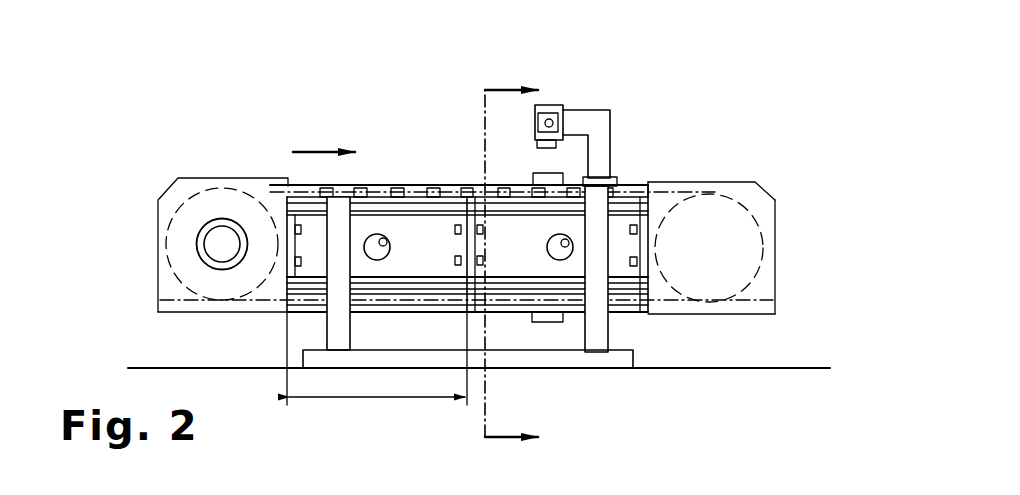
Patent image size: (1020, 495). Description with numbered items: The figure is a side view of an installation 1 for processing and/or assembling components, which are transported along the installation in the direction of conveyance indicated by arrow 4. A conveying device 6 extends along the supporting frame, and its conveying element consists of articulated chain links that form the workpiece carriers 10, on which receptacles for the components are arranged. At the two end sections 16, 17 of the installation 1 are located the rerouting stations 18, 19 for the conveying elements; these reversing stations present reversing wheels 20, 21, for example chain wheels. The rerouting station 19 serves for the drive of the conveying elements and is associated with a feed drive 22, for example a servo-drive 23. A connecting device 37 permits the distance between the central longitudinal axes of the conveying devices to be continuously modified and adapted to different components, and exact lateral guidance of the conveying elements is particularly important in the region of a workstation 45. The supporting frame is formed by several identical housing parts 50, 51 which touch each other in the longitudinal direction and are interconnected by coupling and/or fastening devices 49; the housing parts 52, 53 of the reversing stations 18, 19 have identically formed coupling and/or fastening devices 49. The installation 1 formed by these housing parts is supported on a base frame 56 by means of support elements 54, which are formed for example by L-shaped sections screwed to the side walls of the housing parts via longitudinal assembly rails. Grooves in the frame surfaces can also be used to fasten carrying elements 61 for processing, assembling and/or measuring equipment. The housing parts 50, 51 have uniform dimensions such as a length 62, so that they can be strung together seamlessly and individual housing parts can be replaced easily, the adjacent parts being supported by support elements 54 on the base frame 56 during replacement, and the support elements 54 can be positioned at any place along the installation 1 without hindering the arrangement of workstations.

The installation 1 is at (108, 128).
The direction of conveyance 4 is at (315, 150).
The conveying device 6 is at (641, 170).
The workpiece carrier 10 is at (523, 190).
The end section 16 is at (789, 184).
The end section 17 is at (190, 172).
The rerouting station 18 is at (798, 278).
The rerouting station 19 is at (185, 252).
The reversing wheel 20 is at (732, 193).
The reversing wheel 21 is at (222, 195).
The feed drive 22 is at (175, 295).
The servo-drive 23 is at (220, 255).
The connecting device 37 is at (390, 258).
The workstation 45 is at (590, 97).
The coupling and/or fastening device 49 is at (292, 220).
The housing part 50 is at (419, 232).
The housing part 51 is at (498, 232).
The housing part 52 is at (278, 190).
The housing part 53 is at (660, 190).
The support element 54 is at (328, 327).
The base frame 56 is at (520, 362).
The carrying element 61 is at (603, 158).
The length 62 is at (390, 400).